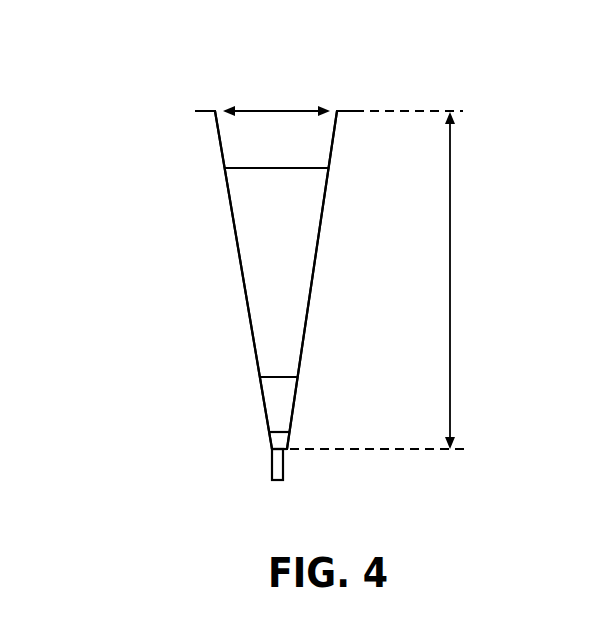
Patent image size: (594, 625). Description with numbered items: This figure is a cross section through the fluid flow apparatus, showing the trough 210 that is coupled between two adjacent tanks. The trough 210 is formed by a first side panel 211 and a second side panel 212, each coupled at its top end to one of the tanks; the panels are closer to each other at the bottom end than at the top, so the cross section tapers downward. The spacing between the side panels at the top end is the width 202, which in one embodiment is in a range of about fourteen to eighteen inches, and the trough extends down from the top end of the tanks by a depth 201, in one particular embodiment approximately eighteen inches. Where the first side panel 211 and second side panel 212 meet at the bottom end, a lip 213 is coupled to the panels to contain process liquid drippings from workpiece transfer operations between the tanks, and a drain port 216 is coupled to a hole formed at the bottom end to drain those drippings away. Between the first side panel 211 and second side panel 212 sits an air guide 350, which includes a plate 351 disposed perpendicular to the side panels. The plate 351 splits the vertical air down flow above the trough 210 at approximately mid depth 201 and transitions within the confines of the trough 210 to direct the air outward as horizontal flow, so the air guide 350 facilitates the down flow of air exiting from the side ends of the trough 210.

The trough 210 is at (160, 146).
The first side panel 211 is at (225, 195).
The second side panel 212 is at (327, 202).
The lip 213 is at (268, 440).
The drain port 216 is at (272, 467).
The depth 201 is at (450, 263).
The width 202 is at (278, 108).
The air guide 350 is at (257, 254).
The plate 351 is at (298, 201).